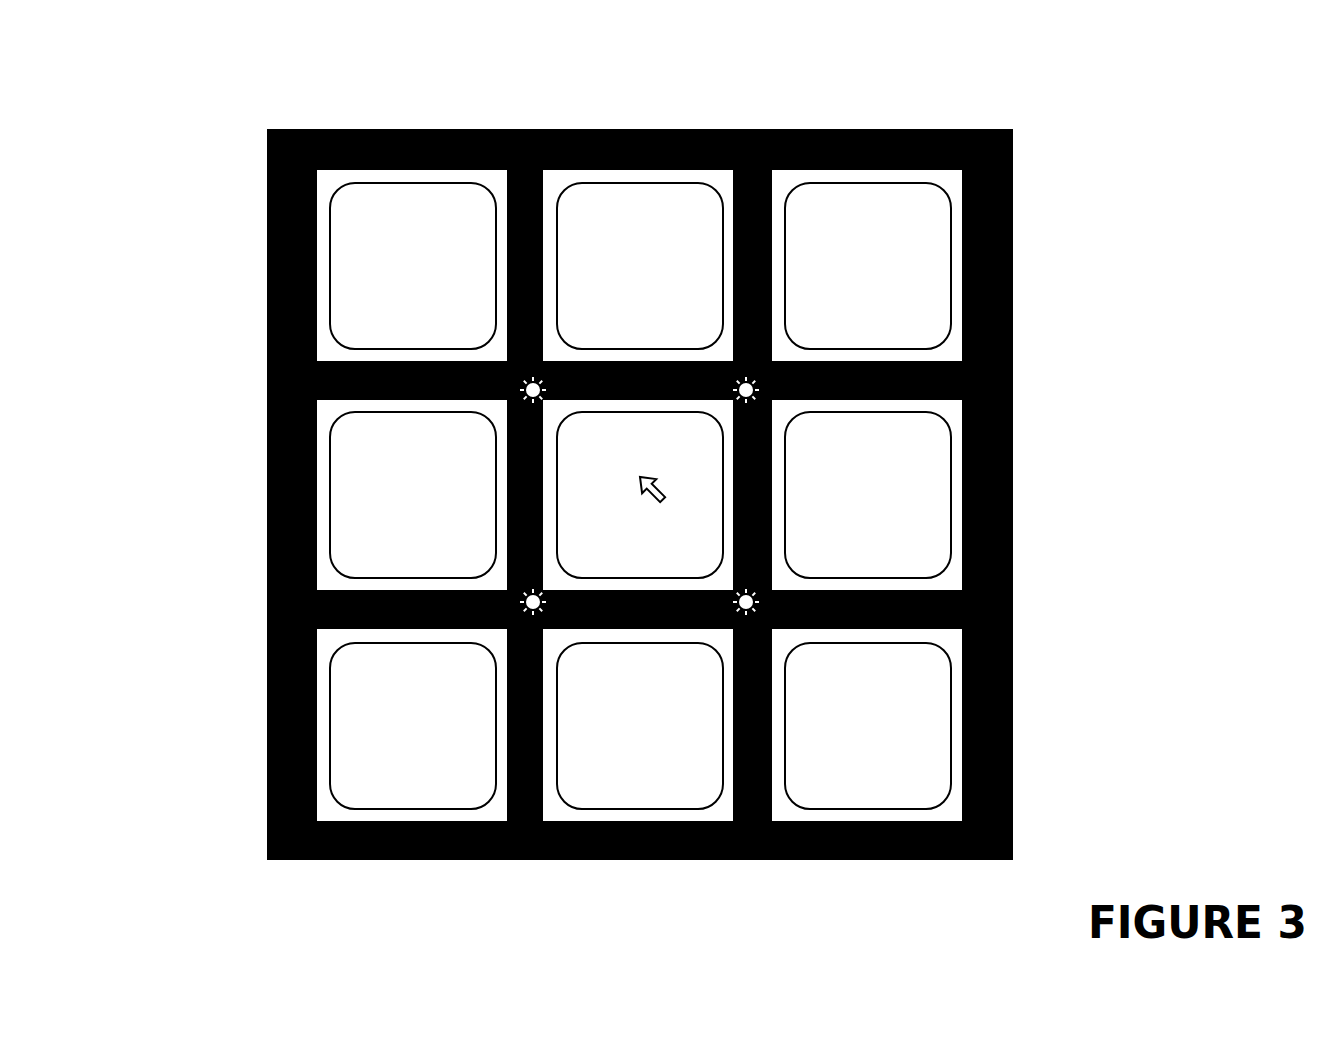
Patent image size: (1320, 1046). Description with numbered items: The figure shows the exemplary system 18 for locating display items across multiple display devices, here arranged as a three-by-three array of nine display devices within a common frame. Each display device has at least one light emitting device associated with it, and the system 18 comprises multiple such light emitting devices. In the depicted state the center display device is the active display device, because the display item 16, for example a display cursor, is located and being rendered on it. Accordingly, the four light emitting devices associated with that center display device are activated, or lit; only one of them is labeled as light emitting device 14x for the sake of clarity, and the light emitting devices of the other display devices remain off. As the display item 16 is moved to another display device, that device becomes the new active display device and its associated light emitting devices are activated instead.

The system 18 is at (245, 117).
The light emitting device 14x is at (545, 400).
The display item 16 is at (651, 499).